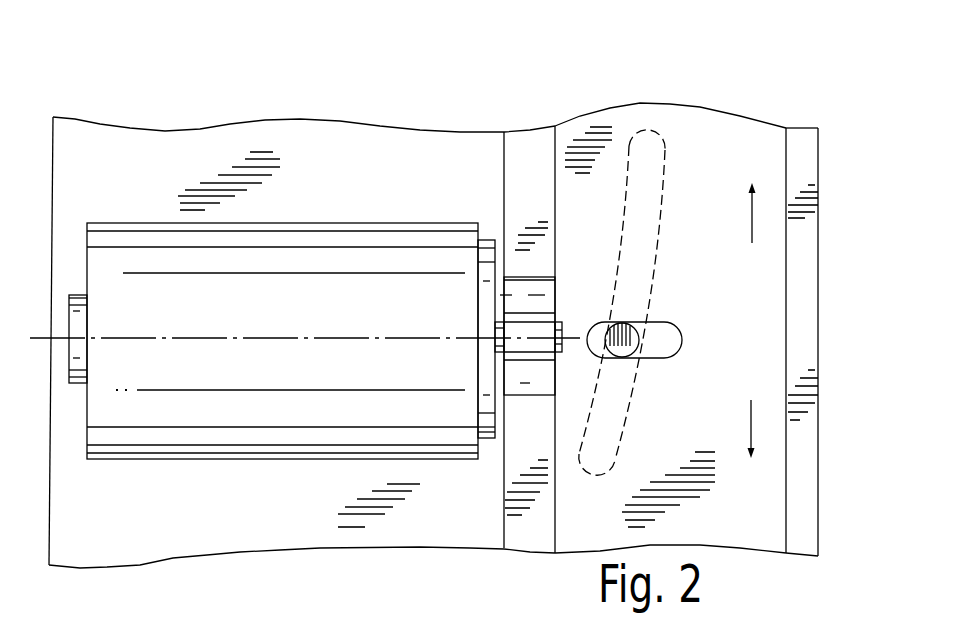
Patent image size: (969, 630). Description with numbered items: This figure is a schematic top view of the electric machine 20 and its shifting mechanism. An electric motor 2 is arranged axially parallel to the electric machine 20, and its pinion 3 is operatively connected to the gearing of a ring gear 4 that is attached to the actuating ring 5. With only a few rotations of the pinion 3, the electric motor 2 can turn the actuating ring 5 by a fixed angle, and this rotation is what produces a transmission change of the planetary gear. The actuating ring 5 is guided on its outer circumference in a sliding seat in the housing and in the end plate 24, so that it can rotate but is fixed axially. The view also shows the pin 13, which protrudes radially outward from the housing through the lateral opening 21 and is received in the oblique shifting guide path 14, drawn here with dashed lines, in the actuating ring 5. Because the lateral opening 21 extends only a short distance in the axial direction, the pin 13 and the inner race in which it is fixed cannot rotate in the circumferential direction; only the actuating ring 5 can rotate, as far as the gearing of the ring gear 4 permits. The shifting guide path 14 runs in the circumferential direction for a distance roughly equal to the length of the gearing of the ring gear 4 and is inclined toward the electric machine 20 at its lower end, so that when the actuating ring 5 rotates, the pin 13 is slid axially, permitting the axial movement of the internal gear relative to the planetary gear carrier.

The electric motor 2 is at (142, 257).
The pinion 3 is at (525, 383).
The ring gear 4 is at (527, 162).
The actuating ring 5 is at (713, 167).
The pin 13 is at (633, 345).
The shifting guide path 14 is at (647, 142).
The electric machine 20 is at (402, 157).
The lateral opening 21 is at (670, 342).
The end plate 24 is at (807, 185).